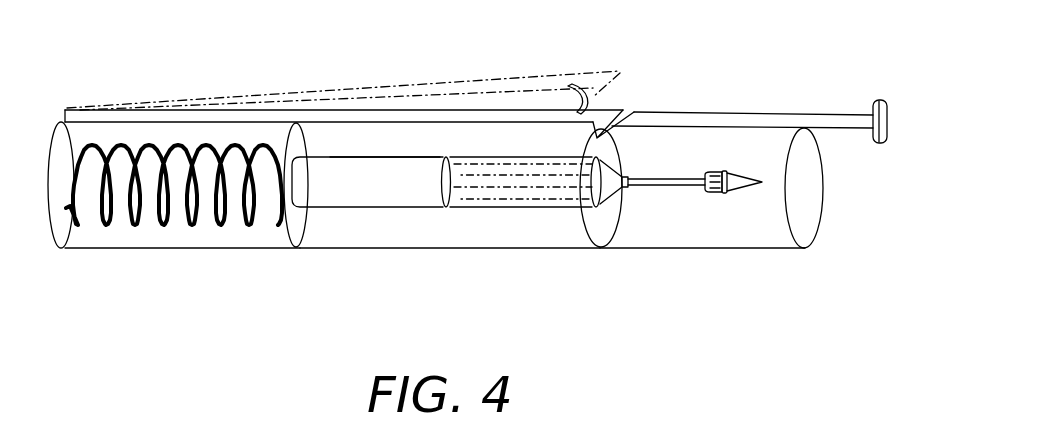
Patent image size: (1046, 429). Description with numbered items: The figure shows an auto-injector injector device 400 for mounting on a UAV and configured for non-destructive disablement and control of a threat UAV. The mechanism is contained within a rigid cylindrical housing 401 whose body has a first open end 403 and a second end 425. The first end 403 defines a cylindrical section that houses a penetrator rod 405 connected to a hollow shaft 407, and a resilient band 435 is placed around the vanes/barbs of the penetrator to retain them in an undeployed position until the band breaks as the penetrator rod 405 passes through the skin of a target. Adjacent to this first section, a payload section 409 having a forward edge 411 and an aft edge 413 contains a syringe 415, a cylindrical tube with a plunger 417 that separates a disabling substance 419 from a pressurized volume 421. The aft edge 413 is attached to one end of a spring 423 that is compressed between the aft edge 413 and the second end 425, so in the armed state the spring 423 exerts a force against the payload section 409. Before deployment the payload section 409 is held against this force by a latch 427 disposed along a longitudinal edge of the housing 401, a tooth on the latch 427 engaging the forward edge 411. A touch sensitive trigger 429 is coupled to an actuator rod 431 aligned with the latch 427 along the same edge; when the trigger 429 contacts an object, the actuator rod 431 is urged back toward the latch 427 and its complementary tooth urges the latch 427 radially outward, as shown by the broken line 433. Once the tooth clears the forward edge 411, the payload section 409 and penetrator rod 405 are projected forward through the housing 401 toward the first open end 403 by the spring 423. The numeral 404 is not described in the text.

The injector device 400 is at (172, 349).
The cylindrical housing 401 is at (713, 248).
The first open end 403 is at (817, 222).
The housing interior chamber 404 is at (718, 213).
The penetrator rod 405 is at (760, 188).
The hollow shaft 407 is at (658, 184).
The payload section 409 is at (427, 228).
The forward edge 411 is at (603, 245).
The aft edge 413 is at (308, 212).
The syringe 415 is at (357, 207).
The plunger 417 is at (447, 160).
The disabling substance 419 is at (512, 185).
The pressurized volume 421 is at (392, 178).
The spring 423 is at (173, 220).
The second end 425 is at (60, 225).
The latch 427 is at (610, 110).
The touch sensitive trigger 429 is at (870, 100).
The actuator rod 431 is at (768, 112).
The broken line 433 is at (557, 77).
The resilient band 435 is at (723, 170).